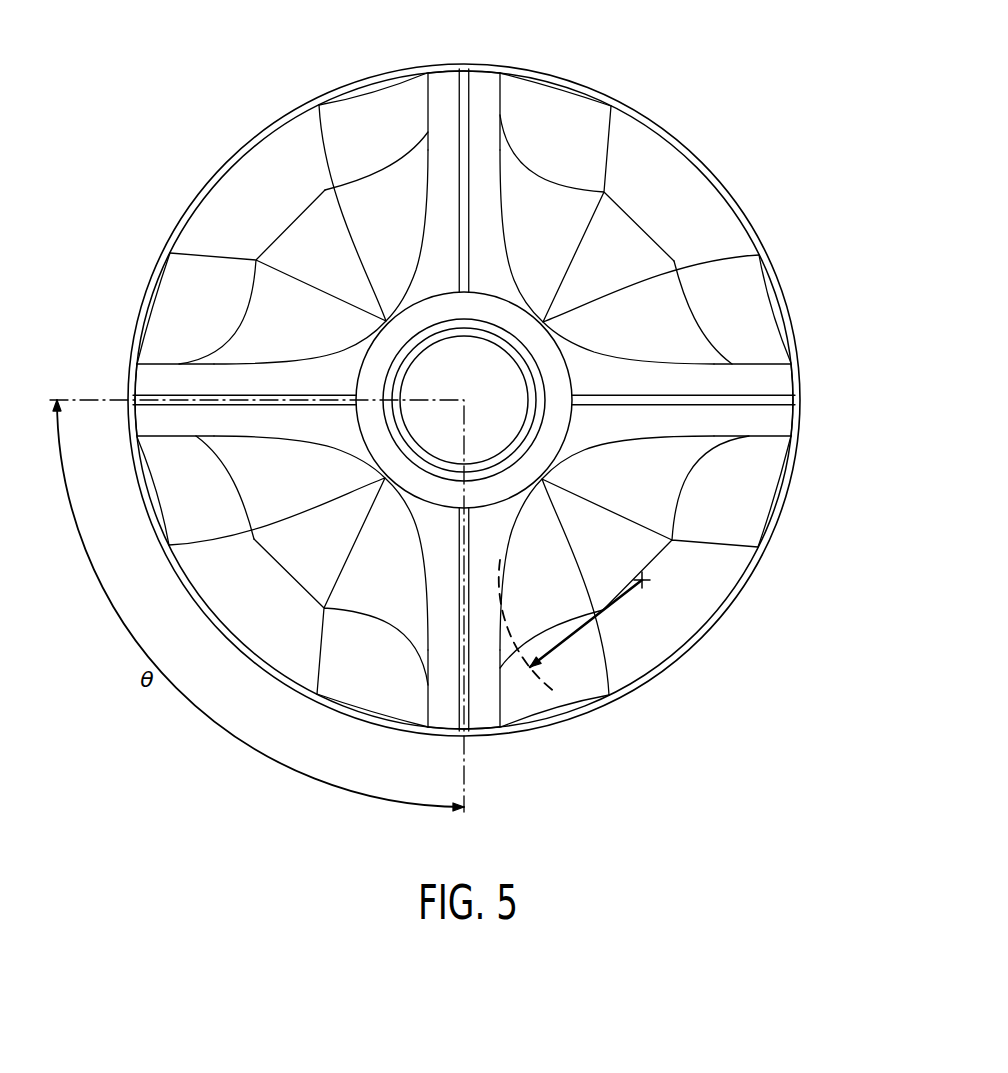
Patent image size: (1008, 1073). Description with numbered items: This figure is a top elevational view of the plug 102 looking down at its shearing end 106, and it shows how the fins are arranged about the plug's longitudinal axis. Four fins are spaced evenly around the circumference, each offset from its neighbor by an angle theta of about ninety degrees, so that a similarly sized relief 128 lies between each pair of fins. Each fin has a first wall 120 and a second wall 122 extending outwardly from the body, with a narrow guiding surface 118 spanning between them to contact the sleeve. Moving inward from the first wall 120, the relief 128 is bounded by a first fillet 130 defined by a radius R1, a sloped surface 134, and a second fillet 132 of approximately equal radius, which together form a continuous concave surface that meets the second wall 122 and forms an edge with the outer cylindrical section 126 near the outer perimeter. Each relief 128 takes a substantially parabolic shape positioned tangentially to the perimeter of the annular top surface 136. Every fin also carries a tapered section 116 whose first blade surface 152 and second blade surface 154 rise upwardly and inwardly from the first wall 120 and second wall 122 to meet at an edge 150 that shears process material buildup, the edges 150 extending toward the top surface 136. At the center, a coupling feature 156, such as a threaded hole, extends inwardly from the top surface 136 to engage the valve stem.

The plug 102 is at (253, 43).
The shearing end 106 is at (543, 330).
The tapered section 116 is at (488, 53).
The guiding surface 118 is at (128, 382).
The first wall 120 is at (177, 365).
The second wall 122 is at (235, 437).
The cylindrical section 126 is at (752, 582).
The relief 128 is at (690, 607).
The first fillet 130 is at (732, 504).
The second fillet 132 is at (522, 684).
The sloped surface 134 is at (657, 642).
The top surface 136 is at (425, 318).
The edge 150 is at (458, 108).
The first blade surface 152 is at (488, 165).
The second blade surface 154 is at (445, 177).
The coupling feature 156 is at (397, 373).